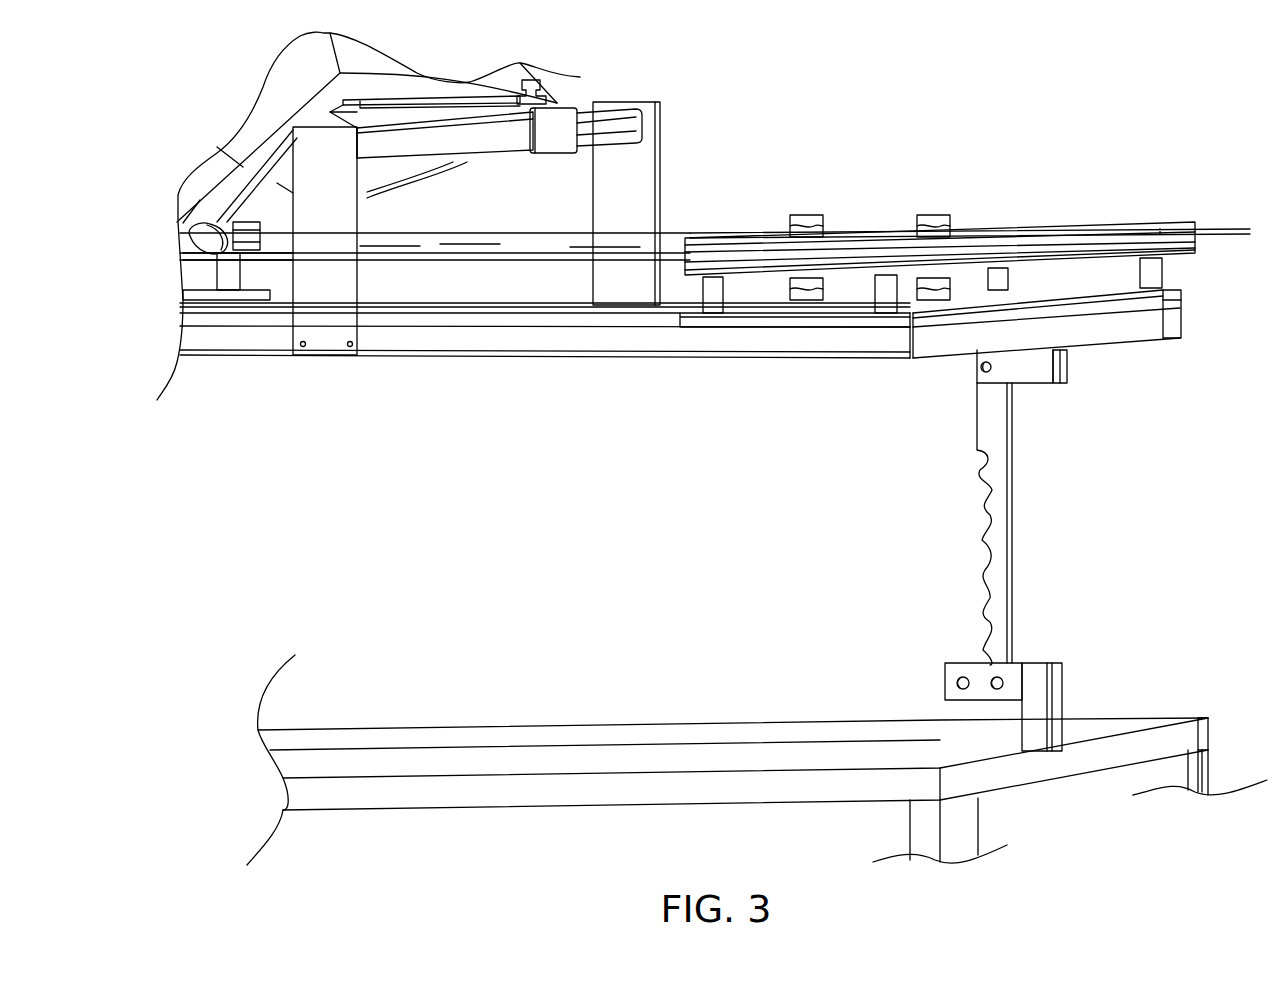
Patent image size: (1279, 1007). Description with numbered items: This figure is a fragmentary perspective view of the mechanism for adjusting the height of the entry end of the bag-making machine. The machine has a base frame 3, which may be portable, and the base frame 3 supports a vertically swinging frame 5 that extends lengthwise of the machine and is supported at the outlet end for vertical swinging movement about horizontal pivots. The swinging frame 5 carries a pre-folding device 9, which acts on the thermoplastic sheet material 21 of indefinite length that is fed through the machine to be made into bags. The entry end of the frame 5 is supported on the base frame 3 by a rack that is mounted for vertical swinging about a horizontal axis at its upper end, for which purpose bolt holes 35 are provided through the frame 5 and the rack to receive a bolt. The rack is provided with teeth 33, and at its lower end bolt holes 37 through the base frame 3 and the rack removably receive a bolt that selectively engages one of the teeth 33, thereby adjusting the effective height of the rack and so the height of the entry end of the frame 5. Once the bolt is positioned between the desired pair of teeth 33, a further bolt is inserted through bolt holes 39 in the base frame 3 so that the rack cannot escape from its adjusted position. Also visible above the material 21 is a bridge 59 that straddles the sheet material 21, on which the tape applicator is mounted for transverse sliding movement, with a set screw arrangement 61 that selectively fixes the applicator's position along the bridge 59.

The base frame 3 is at (590, 760).
The vertically swinging frame 5 is at (583, 345).
The pre-folding device 9 is at (1036, 220).
The thermoplastic sheet material 21 is at (462, 233).
The teeth 33 is at (972, 520).
The bolt holes 35 is at (975, 368).
The bolt holes 37 is at (957, 683).
The bolt holes 39 is at (1003, 683).
The bridge 59 is at (482, 135).
The set screw arrangement 61 is at (552, 135).